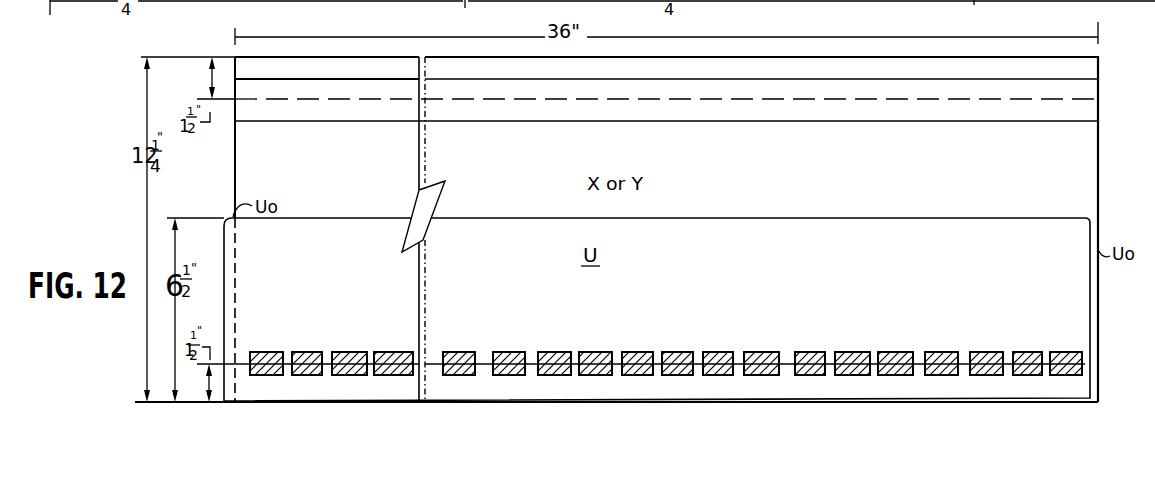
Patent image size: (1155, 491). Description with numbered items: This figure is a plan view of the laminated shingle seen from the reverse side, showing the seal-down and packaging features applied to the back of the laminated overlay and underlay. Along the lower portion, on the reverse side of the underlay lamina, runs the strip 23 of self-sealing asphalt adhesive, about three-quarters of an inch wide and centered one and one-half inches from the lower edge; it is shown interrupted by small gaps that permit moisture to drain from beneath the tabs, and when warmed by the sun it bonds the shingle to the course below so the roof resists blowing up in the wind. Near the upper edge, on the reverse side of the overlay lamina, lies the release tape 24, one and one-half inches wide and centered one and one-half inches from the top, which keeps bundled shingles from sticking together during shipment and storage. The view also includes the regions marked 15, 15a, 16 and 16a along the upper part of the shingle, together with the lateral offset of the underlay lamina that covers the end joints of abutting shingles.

The panel section 15 is at (327, 58).
The panel section 15a is at (1009, 58).
The strip 16 is at (434, 58).
The strip 16a is at (833, 58).
The release tape 24 is at (985, 87).
The strip of asphalt adhesive 23 is at (312, 368).